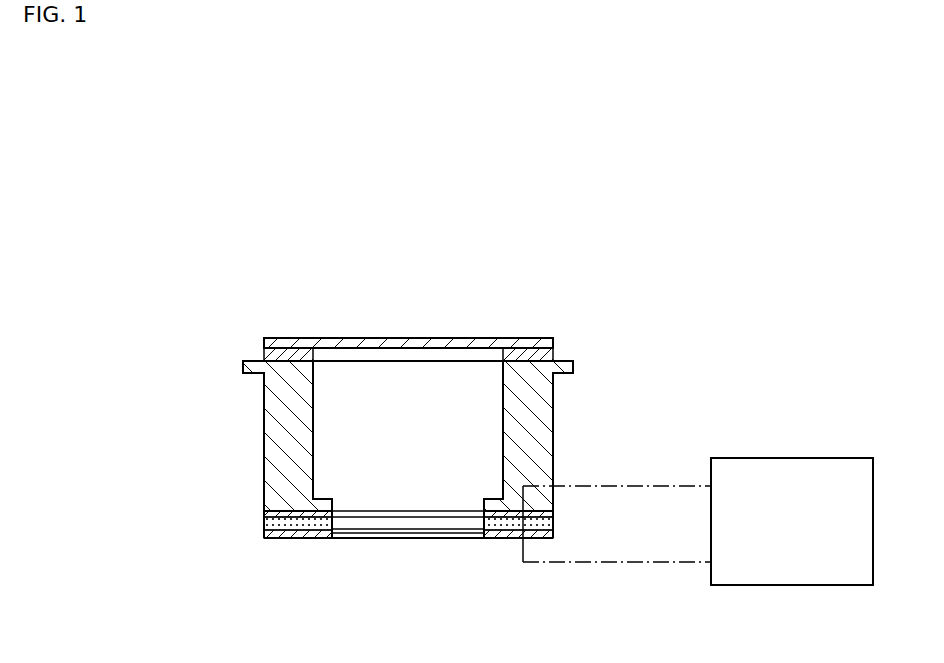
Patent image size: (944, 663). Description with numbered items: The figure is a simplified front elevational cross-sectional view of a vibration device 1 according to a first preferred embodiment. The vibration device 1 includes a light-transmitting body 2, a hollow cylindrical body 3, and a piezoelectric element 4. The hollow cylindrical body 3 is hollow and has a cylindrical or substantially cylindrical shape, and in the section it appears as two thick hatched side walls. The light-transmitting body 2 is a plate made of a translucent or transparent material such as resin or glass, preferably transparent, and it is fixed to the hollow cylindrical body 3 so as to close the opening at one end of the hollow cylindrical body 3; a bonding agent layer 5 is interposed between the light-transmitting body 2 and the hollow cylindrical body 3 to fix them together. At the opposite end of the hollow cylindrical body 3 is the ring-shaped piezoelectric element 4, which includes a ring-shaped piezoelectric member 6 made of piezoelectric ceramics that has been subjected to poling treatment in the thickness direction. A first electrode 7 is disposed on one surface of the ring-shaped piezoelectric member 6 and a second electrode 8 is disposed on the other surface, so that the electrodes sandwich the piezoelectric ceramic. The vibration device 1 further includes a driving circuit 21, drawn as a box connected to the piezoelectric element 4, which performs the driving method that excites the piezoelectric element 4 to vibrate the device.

The vibration device 1 is at (258, 292).
The light-transmitting body 2 is at (412, 338).
The hollow cylindrical body 3 is at (553, 430).
The piezoelectric element 4 is at (282, 550).
The bonding agent layer 5 is at (535, 349).
The ring-shaped piezoelectric member 6 is at (264, 524).
The first electrode 7 is at (283, 511).
The second electrode 8 is at (318, 538).
The driving circuit 21 is at (773, 458).